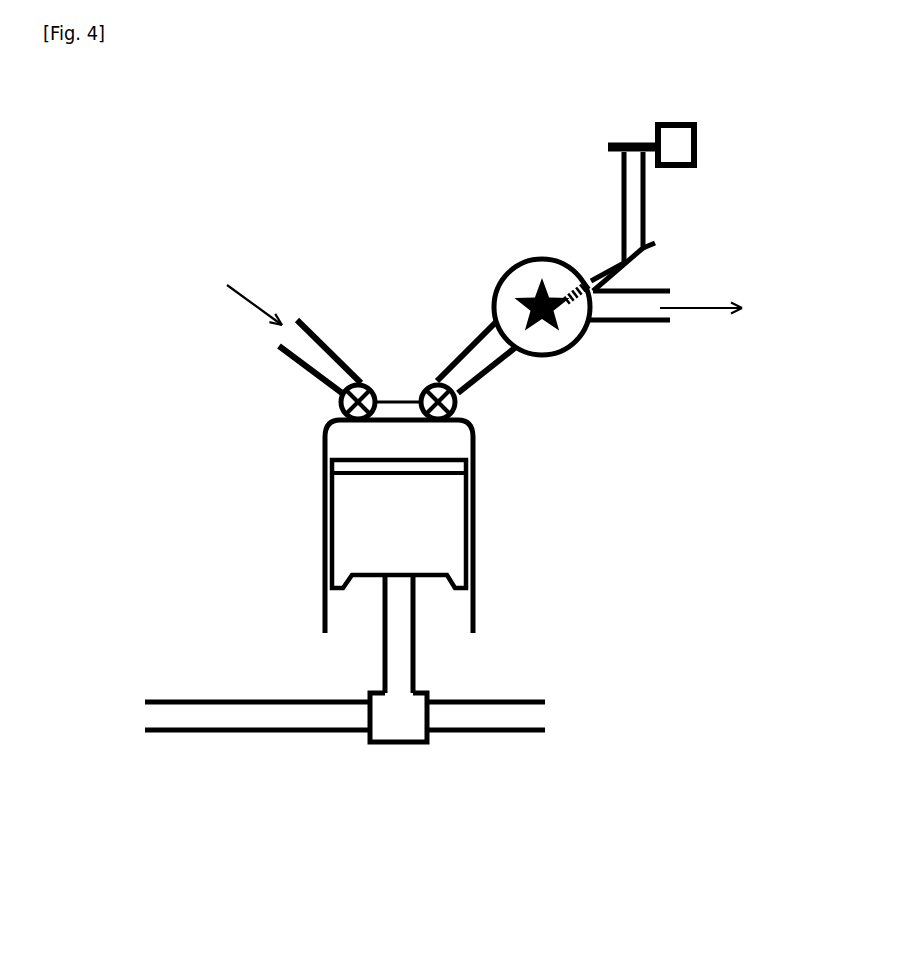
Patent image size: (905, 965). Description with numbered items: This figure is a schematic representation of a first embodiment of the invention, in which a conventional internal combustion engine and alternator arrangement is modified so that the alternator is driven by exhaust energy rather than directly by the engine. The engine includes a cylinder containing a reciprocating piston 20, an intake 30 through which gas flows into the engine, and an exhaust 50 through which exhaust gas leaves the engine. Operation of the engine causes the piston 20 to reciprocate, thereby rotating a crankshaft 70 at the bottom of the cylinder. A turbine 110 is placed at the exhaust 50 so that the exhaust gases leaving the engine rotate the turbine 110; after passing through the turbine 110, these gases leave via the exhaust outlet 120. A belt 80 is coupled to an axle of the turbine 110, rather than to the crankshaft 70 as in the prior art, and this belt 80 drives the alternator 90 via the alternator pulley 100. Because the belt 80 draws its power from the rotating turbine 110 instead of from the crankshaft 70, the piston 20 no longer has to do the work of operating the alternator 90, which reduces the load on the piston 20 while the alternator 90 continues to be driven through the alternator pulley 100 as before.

The piston 20 is at (363, 510).
The intake 30 is at (292, 363).
The exhaust 50 is at (480, 387).
The crankshaft 70 is at (313, 717).
The belt 80 is at (633, 217).
The alternator 90 is at (683, 139).
The alternator pulley 100 is at (603, 139).
The turbine 110 is at (520, 283).
The exhaust outlet 120 is at (648, 327).